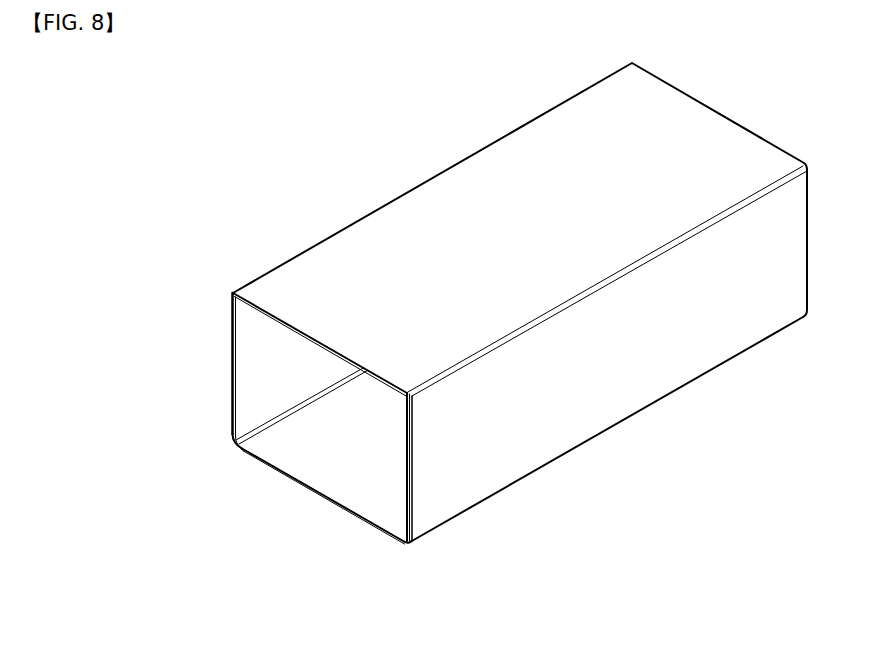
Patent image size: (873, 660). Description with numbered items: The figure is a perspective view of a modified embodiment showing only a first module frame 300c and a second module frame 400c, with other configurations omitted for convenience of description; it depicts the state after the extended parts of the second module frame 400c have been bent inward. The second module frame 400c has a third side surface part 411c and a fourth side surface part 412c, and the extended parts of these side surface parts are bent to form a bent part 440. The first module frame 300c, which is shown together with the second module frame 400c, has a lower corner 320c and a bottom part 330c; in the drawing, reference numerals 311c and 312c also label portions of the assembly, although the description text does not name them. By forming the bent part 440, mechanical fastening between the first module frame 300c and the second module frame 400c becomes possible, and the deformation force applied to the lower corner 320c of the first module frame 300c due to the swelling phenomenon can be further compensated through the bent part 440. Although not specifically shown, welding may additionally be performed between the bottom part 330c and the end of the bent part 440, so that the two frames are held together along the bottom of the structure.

The first module frame 300c is at (284, 494).
The first plate portion 311c is at (252, 355).
The second plate portion 312c is at (408, 484).
The lower corner 320c is at (255, 430).
The bottom part 330c is at (362, 482).
The second module frame 400c is at (383, 177).
The third side surface part 411c is at (232, 313).
The fourth side surface part 412c is at (472, 470).
The bent part 440 is at (253, 460).